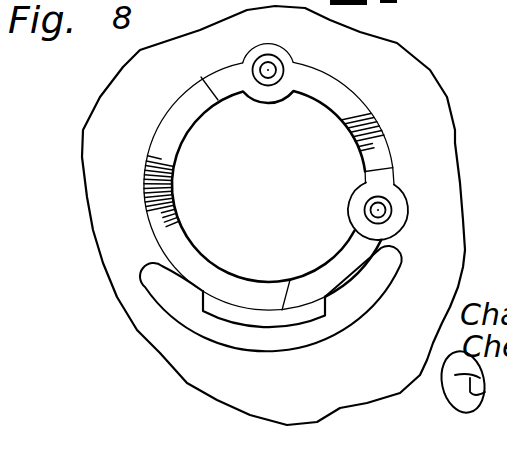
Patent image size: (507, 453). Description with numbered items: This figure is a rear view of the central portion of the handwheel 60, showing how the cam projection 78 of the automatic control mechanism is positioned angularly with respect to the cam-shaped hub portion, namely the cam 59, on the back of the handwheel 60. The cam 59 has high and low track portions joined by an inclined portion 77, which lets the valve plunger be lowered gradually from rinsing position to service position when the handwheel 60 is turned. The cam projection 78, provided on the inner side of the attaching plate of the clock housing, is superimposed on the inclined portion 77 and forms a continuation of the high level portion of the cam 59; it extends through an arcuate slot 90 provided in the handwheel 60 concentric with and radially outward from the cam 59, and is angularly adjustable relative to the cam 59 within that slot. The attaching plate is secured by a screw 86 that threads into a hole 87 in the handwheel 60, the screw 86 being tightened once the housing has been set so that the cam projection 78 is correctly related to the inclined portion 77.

The cam 59 is at (386, 158).
The handwheel 60 is at (455, 184).
The inclined portion of the cam 77 is at (150, 213).
The cam projection 78 is at (276, 327).
The screw 86 is at (283, 62).
The hole 87 is at (250, 66).
The arcuate slot 90 is at (231, 338).